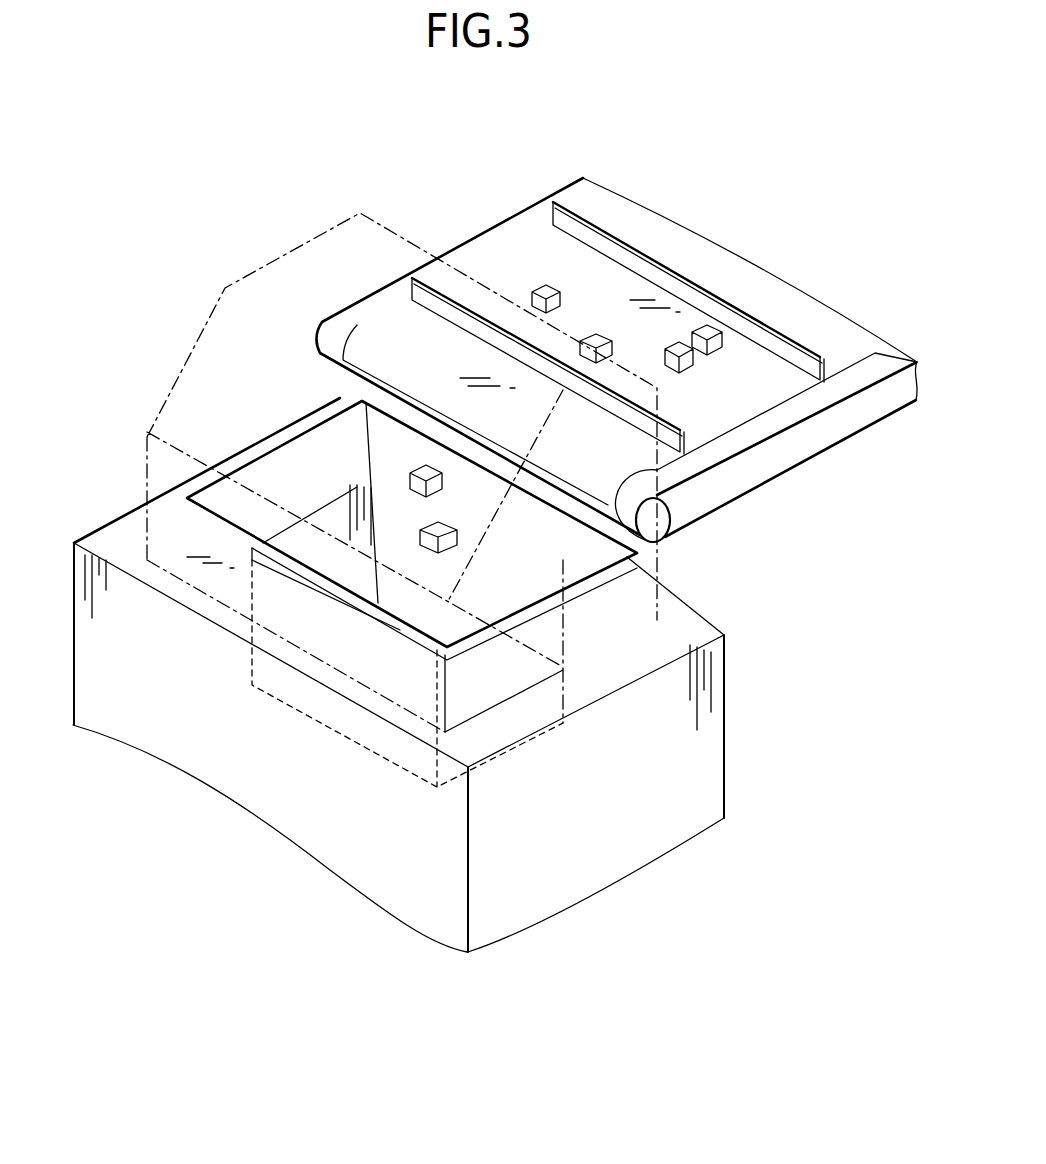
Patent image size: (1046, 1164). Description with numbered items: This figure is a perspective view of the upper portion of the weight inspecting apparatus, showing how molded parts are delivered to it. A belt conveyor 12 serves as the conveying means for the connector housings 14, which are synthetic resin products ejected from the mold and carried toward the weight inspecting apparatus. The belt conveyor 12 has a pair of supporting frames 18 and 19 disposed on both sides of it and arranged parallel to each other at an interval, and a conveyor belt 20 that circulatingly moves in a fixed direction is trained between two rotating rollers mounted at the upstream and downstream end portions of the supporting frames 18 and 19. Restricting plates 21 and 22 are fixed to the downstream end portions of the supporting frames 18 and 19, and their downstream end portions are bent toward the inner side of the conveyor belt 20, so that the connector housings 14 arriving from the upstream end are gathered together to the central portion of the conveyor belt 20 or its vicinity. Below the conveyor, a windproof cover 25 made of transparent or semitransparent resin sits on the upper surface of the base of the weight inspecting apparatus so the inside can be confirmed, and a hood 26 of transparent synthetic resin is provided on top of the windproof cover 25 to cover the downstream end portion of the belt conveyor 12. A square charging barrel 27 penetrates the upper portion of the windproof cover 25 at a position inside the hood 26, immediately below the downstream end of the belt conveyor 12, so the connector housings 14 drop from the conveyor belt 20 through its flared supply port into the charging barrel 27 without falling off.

The belt conveyor 12 is at (808, 471).
The connector housings 14 is at (703, 370).
The supporting frame 18 is at (370, 305).
The supporting frame 19 is at (750, 490).
The conveyor belt 20 is at (697, 255).
The restricting plate 21 is at (453, 300).
The restricting plate 22 is at (602, 290).
The windproof cover 25 is at (703, 745).
The hood 26 is at (144, 466).
The charging barrel 27 is at (230, 520).